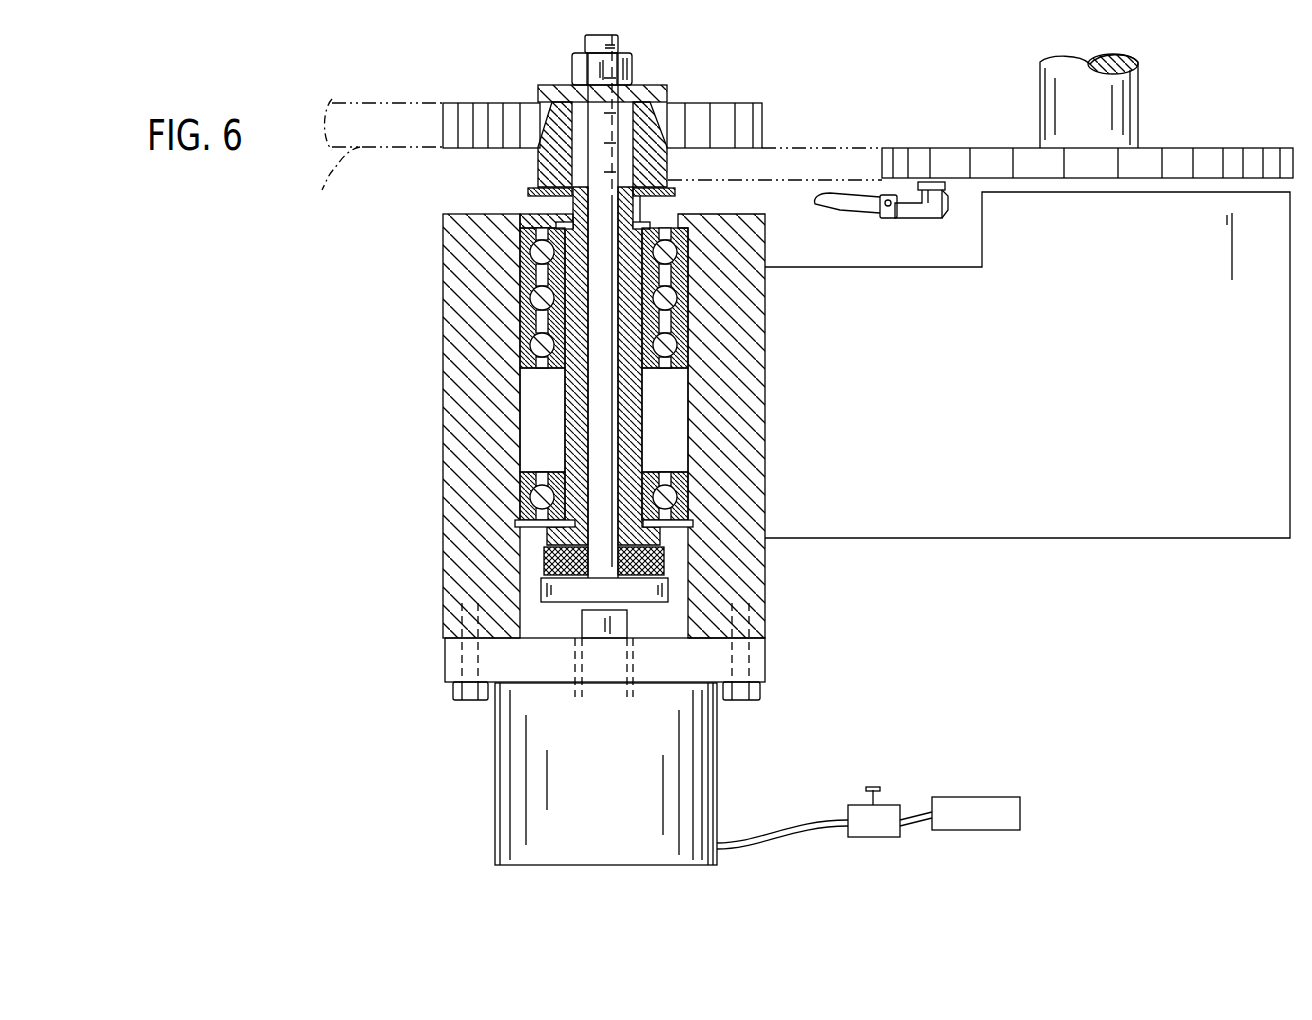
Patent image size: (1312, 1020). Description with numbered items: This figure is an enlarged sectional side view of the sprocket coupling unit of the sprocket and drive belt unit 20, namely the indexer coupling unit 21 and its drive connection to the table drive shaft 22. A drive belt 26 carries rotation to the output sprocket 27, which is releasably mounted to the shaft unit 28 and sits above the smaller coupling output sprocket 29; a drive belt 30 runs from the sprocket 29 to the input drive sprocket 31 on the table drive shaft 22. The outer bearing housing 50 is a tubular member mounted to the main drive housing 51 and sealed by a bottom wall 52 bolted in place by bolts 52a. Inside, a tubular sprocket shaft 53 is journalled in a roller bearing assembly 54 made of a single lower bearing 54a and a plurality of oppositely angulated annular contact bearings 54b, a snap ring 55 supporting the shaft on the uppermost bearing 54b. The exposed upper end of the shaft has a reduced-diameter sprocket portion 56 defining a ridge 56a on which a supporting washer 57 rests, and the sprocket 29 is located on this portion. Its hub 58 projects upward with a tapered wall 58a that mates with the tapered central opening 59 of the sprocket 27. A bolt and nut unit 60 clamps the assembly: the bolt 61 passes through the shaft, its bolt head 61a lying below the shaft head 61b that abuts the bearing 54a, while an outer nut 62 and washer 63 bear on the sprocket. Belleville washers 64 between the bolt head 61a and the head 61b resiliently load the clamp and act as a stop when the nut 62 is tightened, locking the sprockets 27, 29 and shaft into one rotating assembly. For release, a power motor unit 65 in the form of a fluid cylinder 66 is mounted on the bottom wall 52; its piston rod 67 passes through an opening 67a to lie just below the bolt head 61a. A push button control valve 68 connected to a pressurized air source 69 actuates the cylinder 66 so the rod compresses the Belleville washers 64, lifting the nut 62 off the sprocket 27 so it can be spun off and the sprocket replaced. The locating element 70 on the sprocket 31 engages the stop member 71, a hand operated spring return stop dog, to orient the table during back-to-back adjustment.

The sprocket and drive belt unit 20 is at (364, 100).
The indexer coupling unit 21 is at (441, 323).
The table drive shaft 22 is at (809, 145).
The drive belt 26 is at (336, 180).
The output sprocket 27 is at (735, 103).
The shaft unit 28 is at (638, 70).
The coupling output sprocket 29 is at (536, 170).
The drive belt 30 is at (866, 145).
The input drive sprocket 31 is at (1040, 183).
The outer bearing housing 50 is at (766, 364).
The main drive housing 51 is at (1085, 527).
The bottom wall 52 is at (515, 675).
The bolts 52a is at (460, 703).
The sprocket shaft 53 is at (556, 424).
The roller bearing assembly 54 is at (674, 377).
The lower bearing 54a is at (688, 505).
The annular contact bearings 54b is at (690, 296).
The snap ring 55 is at (443, 237).
The sprocket portion 56 is at (443, 228).
The ridge 56a is at (655, 182).
The supporting washer 57 is at (540, 193).
The hub 58 is at (560, 150).
The tapered wall 58a is at (673, 135).
The central opening 59 is at (545, 148).
The bolt and nut unit 60 is at (610, 18).
The bolt 61 is at (600, 383).
The bolt head 61a is at (540, 581).
The head 61b is at (548, 530).
The nut 62 is at (572, 78).
The washer 63 is at (538, 100).
The Belleville washers 64 is at (680, 562).
The power motor unit 65 is at (605, 774).
The fluid cylinder 66 is at (718, 785).
The piston rod 67 is at (625, 624).
The opening 67a is at (636, 660).
The push button control valve 68 is at (885, 815).
The pressurized air source 69 is at (975, 797).
The locating element 70 is at (937, 181).
The stop member 71 is at (895, 229).